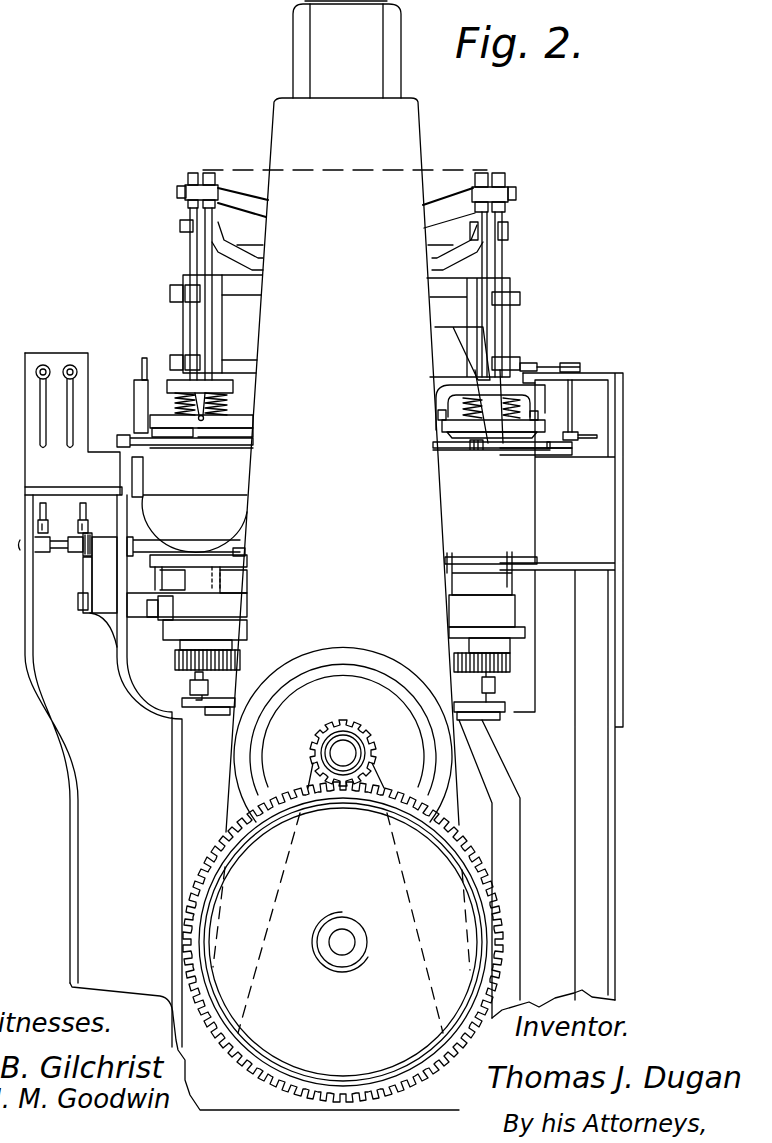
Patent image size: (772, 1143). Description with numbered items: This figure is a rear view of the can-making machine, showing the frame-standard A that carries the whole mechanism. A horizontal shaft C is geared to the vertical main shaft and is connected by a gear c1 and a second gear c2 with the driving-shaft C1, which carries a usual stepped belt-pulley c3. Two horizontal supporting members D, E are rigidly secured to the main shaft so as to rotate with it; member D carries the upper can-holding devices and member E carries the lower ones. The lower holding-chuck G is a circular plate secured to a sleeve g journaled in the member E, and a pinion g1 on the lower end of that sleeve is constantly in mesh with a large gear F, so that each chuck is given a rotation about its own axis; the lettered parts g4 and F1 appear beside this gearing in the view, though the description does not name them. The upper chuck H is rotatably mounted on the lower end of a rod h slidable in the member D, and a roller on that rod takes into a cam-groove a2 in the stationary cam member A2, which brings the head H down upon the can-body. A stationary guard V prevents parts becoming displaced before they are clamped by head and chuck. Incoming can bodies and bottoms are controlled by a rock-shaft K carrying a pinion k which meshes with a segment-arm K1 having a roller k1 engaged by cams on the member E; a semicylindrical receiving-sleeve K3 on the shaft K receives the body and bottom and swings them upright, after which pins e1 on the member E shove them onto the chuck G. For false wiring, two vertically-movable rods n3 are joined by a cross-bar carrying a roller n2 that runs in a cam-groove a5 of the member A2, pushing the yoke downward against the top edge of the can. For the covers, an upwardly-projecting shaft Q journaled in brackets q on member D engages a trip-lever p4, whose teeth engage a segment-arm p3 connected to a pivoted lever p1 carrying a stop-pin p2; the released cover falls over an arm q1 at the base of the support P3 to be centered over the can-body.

The frame-standard A is at (324, 555).
The stationary cam member A2 is at (455, 172).
The cam-groove a5 is at (432, 206).
The cam-groove a2 is at (435, 258).
The roller n2 is at (473, 232).
The vertically-movable rods n3 is at (207, 250).
The rod h is at (492, 275).
The upper horizontal supporting member D is at (216, 324).
The upwardly-projecting shaft Q is at (137, 380).
The brackets q is at (188, 393).
The upper chuck H is at (248, 423).
The trip-lever p4 is at (520, 363).
The segment-arm p3 is at (565, 368).
The intermediately-pivoted lever p1 is at (580, 442).
The stop-pin p2 is at (597, 433).
The support P3 is at (485, 450).
The arm q1 is at (525, 449).
The semicylindrical receiving-sleeve K3 is at (189, 504).
The rock-shaft K is at (130, 554).
The pinion k is at (88, 530).
The segment-arm K1 is at (85, 580).
The stationary guard V is at (245, 558).
The roller k1 is at (173, 612).
The pinion g1 is at (176, 654).
The large gear F is at (242, 660).
The stud g4 is at (190, 682).
The lower holding-chuck G is at (496, 557).
The pins e1 is at (512, 557).
The lower horizontal supporting member E is at (487, 624).
The sleeve g is at (512, 655).
The gear F1 is at (455, 662).
The horizontal shaft C is at (345, 937).
The gear c1 is at (480, 877).
The driving-shaft C1 is at (343, 750).
The gear c2 is at (343, 734).
The stepped belt-pulley c3 is at (395, 687).